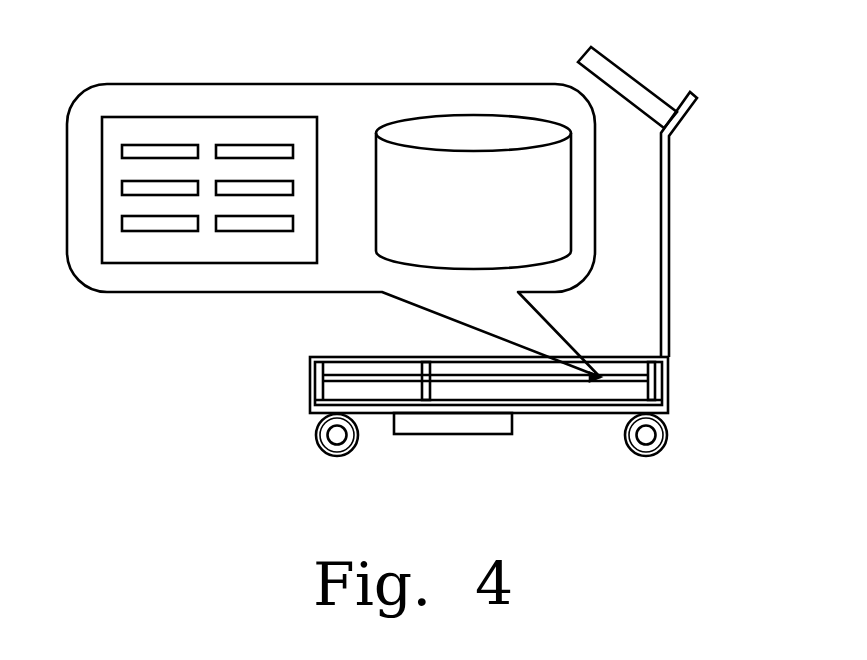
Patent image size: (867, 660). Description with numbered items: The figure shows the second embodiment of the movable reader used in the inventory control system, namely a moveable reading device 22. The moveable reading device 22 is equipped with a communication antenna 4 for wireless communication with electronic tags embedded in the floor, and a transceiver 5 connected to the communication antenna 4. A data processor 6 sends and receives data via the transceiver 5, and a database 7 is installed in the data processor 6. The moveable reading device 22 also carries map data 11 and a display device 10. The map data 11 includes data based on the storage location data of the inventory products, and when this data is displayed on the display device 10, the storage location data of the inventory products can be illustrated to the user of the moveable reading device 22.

The communication antenna 4 is at (457, 434).
The transceiver 5 is at (338, 390).
The data processor 6 is at (588, 386).
The database 7 is at (485, 213).
The display device 10 is at (642, 80).
The map data 11 is at (207, 142).
The moveable reading device 22 is at (669, 279).